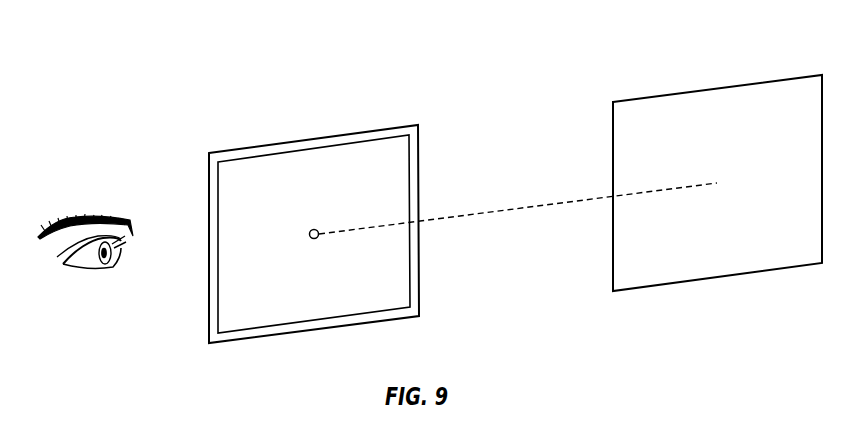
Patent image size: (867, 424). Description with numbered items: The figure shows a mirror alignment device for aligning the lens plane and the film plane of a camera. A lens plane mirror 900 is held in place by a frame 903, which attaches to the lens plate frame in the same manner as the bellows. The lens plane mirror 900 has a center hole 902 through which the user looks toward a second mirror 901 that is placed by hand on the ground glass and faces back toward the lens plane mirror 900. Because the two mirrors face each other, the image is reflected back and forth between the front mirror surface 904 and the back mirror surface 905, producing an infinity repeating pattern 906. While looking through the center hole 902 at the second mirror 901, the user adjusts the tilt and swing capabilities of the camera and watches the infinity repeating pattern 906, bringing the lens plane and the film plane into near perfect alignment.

The lens plane mirror 900 is at (116, 66).
The second mirror 901 is at (765, 275).
The center hole 902 is at (311, 229).
The frame 903 is at (268, 145).
The front mirror surface 904 is at (395, 175).
The back mirror surface 905 is at (613, 262).
The infinity repeating pattern 906 is at (512, 210).